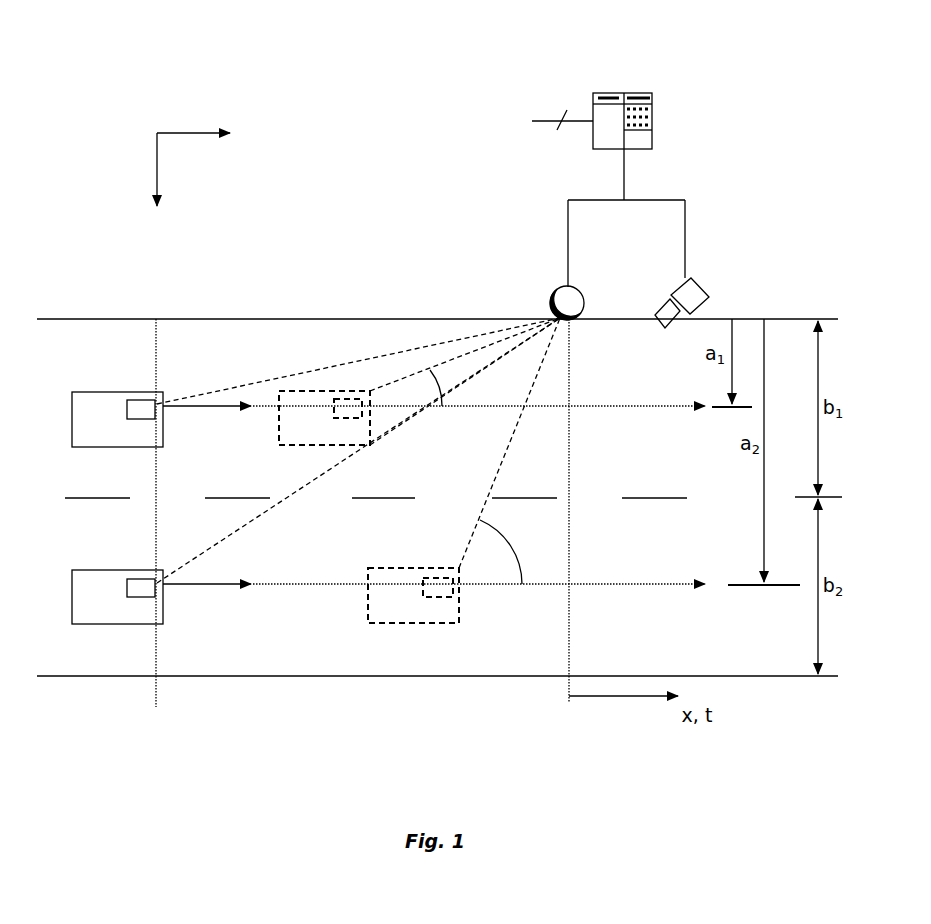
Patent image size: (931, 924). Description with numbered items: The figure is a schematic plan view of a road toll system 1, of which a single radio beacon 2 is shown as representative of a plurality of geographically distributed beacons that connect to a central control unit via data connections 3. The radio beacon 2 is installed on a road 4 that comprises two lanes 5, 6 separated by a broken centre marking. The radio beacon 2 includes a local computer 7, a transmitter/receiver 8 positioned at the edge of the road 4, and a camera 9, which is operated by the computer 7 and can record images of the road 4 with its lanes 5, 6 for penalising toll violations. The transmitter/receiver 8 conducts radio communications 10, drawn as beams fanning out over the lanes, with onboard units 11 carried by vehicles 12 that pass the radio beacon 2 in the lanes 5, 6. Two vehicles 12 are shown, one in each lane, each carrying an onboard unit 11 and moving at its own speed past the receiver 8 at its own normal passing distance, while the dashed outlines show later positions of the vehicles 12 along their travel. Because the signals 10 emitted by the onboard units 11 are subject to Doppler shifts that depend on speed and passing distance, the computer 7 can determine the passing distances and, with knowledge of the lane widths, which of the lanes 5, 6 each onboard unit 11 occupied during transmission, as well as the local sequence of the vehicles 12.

The road toll system 1 is at (75, 24).
The radio beacon 2 is at (738, 131).
The data connection 3 is at (545, 117).
The road 4 is at (95, 703).
The lane 5 is at (261, 332).
The lane 6 is at (287, 668).
The local computer 7 is at (645, 138).
The transmitter/receiver 8 is at (573, 298).
The camera 9 is at (692, 292).
The radio communications 10 is at (537, 353).
The onboard unit 11 is at (143, 408).
The vehicle 12 is at (110, 437).